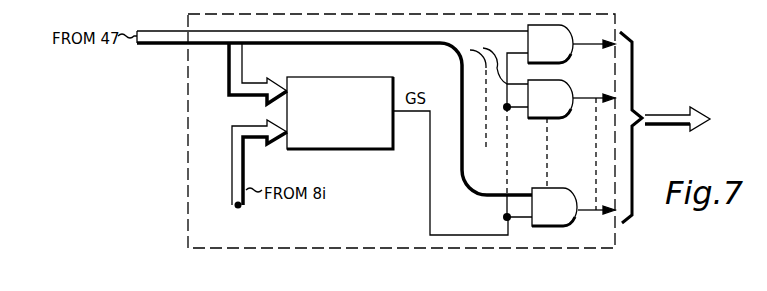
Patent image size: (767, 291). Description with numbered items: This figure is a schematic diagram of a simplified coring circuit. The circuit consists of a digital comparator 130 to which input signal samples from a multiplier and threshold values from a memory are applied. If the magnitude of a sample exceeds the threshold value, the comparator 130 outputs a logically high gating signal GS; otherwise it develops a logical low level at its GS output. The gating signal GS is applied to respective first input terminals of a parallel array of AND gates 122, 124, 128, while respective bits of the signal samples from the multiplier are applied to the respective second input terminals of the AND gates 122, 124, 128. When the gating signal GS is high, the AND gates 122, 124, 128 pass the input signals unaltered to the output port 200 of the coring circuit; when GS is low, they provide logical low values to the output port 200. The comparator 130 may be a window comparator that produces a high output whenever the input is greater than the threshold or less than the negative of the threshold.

The AND gate 122 is at (570, 52).
The AND gate 124 is at (563, 112).
The AND gate 128 is at (560, 190).
The comparator 130 is at (355, 149).
The output port 200 is at (672, 110).